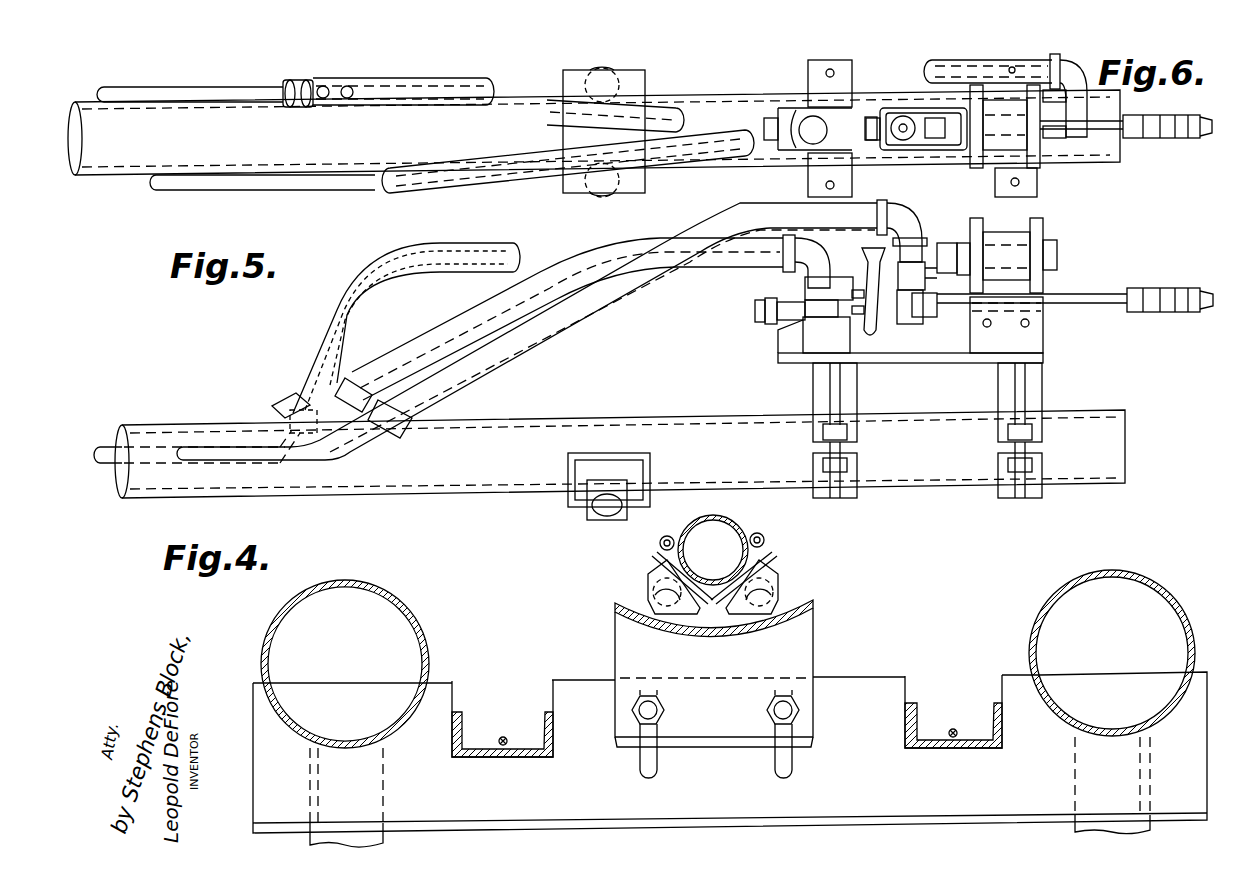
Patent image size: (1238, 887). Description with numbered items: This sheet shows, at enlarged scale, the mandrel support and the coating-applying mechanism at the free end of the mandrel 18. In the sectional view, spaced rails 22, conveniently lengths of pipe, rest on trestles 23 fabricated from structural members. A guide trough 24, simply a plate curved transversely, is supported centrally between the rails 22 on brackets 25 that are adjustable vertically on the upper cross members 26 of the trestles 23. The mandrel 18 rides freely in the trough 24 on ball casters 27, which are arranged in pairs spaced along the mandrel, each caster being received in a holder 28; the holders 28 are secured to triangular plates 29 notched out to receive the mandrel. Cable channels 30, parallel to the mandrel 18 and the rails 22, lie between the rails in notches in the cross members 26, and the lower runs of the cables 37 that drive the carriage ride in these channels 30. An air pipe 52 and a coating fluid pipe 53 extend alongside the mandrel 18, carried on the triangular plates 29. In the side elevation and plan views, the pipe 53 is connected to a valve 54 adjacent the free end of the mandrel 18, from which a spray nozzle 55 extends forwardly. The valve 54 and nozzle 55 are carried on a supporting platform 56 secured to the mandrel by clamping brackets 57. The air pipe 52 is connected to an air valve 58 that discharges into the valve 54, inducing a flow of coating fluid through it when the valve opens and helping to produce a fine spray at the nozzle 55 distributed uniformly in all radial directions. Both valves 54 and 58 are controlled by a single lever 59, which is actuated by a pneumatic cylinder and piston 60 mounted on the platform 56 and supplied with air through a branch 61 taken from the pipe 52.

In FIG. 6, the mandrel 18 is at (718, 103).
In FIG. 5, the mandrel 18 is at (608, 430).
In FIG. 4, the mandrel 18 is at (728, 524).
In FIG. 4, the rails 22 is at (393, 597).
In FIG. 4, the trestles 23 is at (410, 833).
In FIG. 4, the guide trough 24 is at (635, 602).
In FIG. 4, the brackets 25 is at (780, 634).
In FIG. 4, the upper cross members 26 is at (862, 695).
In FIG. 6, the ball casters 27 is at (583, 75).
In FIG. 5, the ball casters 27 is at (580, 512).
In FIG. 4, the ball casters 27 is at (655, 622).
In FIG. 4, the holder 28 is at (660, 571).
In FIG. 4, the triangular plates 29 is at (760, 558).
In FIG. 4, the cable channels 30 is at (490, 753).
In FIG. 4, the cables 37 is at (508, 737).
In FIG. 6, the air pipe 52 is at (197, 96).
In FIG. 5, the air pipe 52 is at (118, 447).
In FIG. 4, the air pipe 52 is at (764, 536).
In FIG. 6, the coating fluid pipe 53 is at (315, 182).
In FIG. 5, the coating fluid pipe 53 is at (250, 458).
In FIG. 4, the coating fluid pipe 53 is at (657, 543).
In FIG. 6, the valve 54 is at (913, 152).
In FIG. 5, the valve 54 is at (905, 320).
In FIG. 6, the spray nozzle 55 is at (1177, 138).
In FIG. 5, the spray nozzle 55 is at (1160, 292).
In FIG. 5, the supporting platform 56 is at (893, 362).
In FIG. 5, the clamping brackets 57 is at (818, 425).
In FIG. 6, the air valve 58 is at (815, 140).
In FIG. 5, the air valve 58 is at (825, 290).
In FIG. 6, the lever 59 is at (858, 122).
In FIG. 5, the lever 59 is at (866, 258).
In FIG. 6, the pneumatic cylinder and piston 60 is at (985, 140).
In FIG. 5, the pneumatic cylinder and piston 60 is at (1005, 232).
In FIG. 6, the branch 61 is at (1024, 96).
In FIG. 5, the branch 61 is at (337, 305).